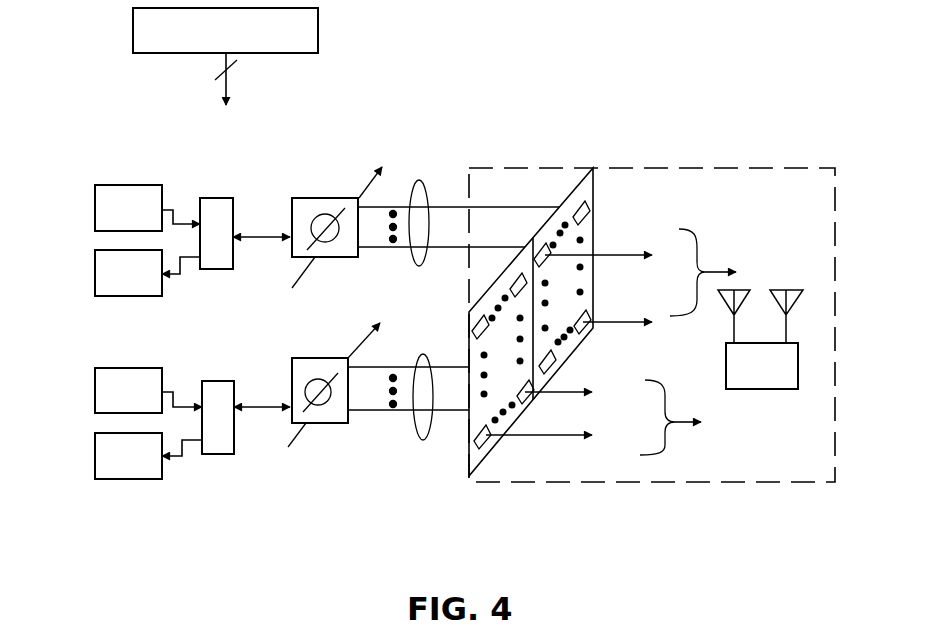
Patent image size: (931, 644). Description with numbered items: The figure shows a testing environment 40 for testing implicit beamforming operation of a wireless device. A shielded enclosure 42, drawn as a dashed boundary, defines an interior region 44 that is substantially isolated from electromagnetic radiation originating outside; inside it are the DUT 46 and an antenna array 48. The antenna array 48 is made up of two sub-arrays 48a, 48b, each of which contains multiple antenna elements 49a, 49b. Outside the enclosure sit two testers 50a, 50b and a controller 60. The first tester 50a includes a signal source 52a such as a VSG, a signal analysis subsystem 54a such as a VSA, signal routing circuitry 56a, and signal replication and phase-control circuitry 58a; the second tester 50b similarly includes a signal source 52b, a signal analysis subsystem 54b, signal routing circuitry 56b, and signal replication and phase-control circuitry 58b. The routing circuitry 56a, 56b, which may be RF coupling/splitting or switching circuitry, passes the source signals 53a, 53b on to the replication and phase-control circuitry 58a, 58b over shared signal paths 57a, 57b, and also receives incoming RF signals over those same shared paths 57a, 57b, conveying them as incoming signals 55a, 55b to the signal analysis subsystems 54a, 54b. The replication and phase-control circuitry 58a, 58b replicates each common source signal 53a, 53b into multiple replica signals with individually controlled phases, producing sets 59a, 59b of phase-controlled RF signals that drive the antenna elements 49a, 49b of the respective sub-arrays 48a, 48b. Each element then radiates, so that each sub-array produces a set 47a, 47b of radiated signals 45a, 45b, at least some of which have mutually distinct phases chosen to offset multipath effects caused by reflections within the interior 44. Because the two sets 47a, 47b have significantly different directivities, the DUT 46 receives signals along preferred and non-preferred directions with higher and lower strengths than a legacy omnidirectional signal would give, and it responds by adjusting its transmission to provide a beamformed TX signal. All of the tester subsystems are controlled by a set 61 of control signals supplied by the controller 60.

The testing environment 40 is at (455, 290).
The shielded enclosure 42 is at (793, 168).
The interior region 44 is at (777, 198).
The radiated signals 45a is at (628, 245).
The radiated signals 45b is at (560, 433).
The DUT 46 is at (798, 362).
The set of radiated signals 47a is at (716, 272).
The set of radiated signals 47b is at (683, 422).
The antenna array 48 is at (533, 299).
The first antenna sub-array 48a is at (583, 316).
The second antenna sub-array 48b is at (468, 346).
The antenna elements 49a is at (588, 209).
The antenna elements 49b is at (480, 443).
The tester 50a is at (159, 241).
The tester 50b is at (159, 423).
The signal source 52a is at (108, 185).
The signal source 52b is at (120, 368).
The source signal 53a is at (166, 205).
The source signal 53b is at (168, 388).
The signal analysis subsystem 54a is at (122, 296).
The signal analysis subsystem 54b is at (135, 479).
The incoming signals 55a is at (195, 258).
The incoming signals 55b is at (196, 441).
The signal routing circuitry 56a is at (210, 198).
The signal routing circuitry 56b is at (228, 454).
The shared signal path 57a is at (250, 232).
The shared signal path 57b is at (250, 402).
The signal replication and phase-control circuitry 58a is at (300, 198).
The signal replication and phase-control circuitry 58b is at (330, 423).
The set of phase-controlled RF signals 59a is at (420, 180).
The set of phase-controlled RF signals 59b is at (425, 440).
The controller 60 is at (318, 28).
The set of control signals 61 is at (227, 83).